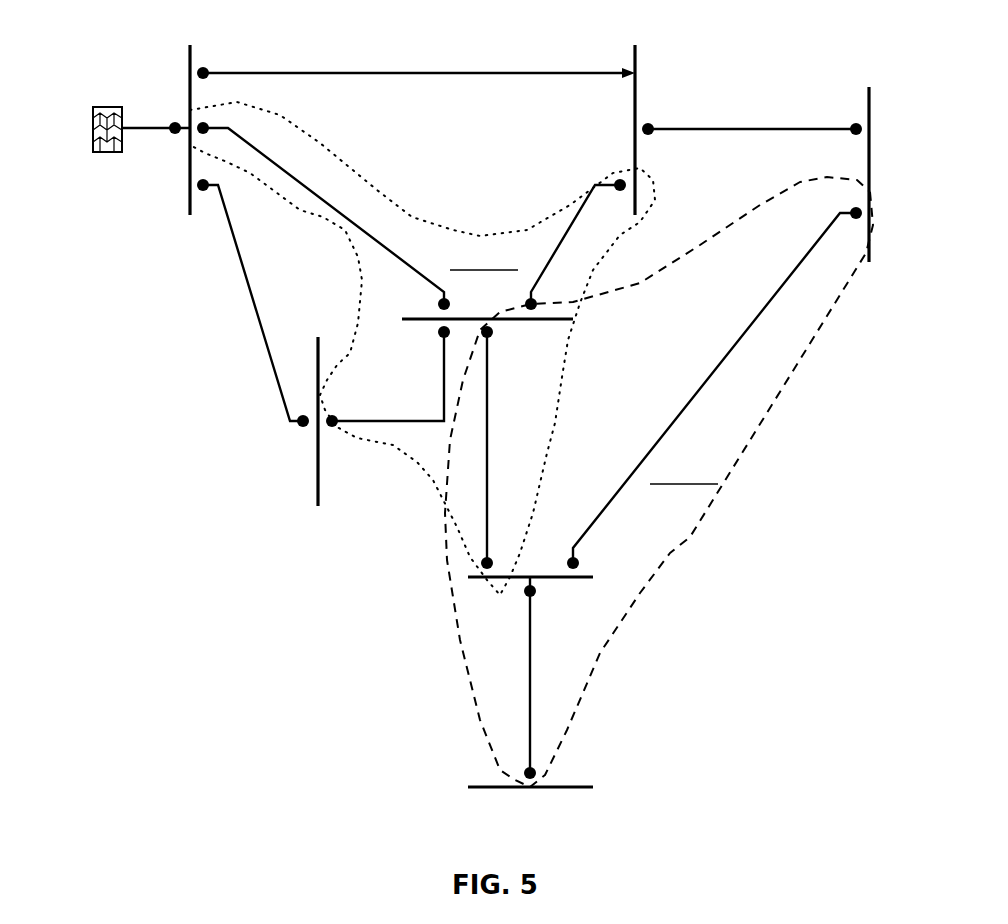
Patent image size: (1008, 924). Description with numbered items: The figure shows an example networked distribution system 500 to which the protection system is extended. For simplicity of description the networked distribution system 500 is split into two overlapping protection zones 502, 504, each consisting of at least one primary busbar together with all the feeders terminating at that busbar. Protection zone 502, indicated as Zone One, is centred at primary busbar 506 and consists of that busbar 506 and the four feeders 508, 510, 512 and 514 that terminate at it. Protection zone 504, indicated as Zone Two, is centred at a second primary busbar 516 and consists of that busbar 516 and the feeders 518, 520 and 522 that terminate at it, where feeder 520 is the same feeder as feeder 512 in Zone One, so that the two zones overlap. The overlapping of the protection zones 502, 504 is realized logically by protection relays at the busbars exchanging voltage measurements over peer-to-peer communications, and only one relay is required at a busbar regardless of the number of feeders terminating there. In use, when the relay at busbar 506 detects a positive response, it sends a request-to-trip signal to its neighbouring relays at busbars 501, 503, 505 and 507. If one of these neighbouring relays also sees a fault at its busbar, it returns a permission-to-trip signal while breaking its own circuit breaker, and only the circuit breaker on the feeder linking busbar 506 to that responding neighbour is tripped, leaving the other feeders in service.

The networked distribution system 500 is at (288, 443).
The busbar 501 is at (177, 188).
The protection zone 502 is at (413, 228).
The busbar 503 is at (309, 498).
The protection zone 504 is at (612, 532).
The busbar 505 is at (490, 588).
The primary busbar 506 is at (410, 328).
The busbar 507 is at (658, 168).
The feeder 508 is at (327, 185).
The feeder 510 is at (397, 432).
The feeder 512 is at (488, 440).
The feeder 514 is at (567, 230).
The second primary busbar 516 is at (548, 588).
The feeder 518 is at (530, 705).
The feeder 520 is at (716, 365).
The feeder 522 is at (487, 513).